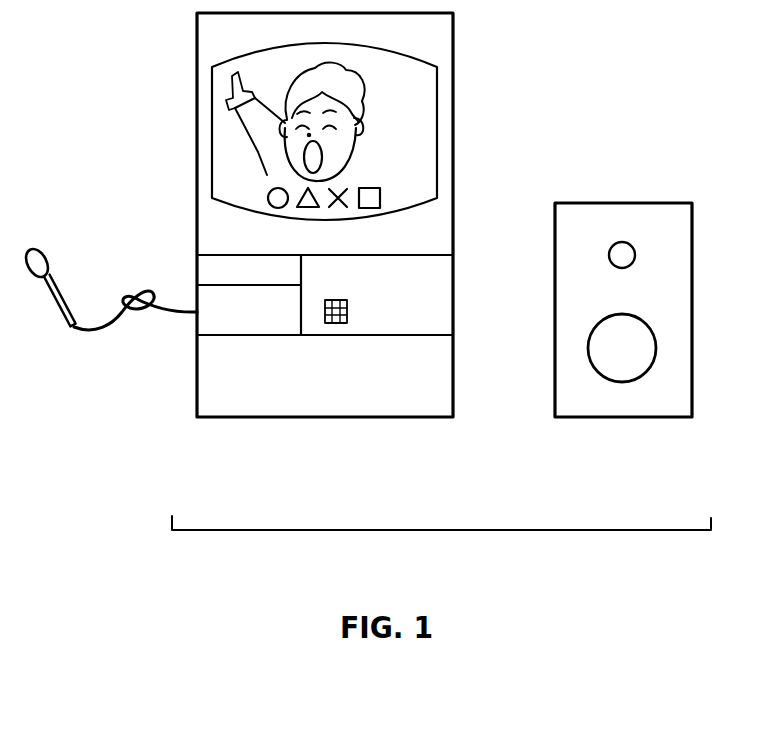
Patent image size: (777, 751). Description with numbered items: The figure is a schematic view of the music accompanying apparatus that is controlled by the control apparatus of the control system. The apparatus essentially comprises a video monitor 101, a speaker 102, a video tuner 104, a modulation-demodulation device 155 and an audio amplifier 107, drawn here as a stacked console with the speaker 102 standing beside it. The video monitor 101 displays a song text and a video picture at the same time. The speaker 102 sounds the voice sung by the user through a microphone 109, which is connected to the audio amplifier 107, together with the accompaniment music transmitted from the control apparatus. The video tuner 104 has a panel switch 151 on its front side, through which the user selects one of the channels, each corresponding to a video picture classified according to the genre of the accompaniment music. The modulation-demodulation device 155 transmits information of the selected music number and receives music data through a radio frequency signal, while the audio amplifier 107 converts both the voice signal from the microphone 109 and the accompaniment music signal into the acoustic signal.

The video monitor 101 is at (455, 40).
The speaker 102 is at (697, 300).
The video tuner 104 is at (455, 300).
The audio amplifier 107 is at (455, 383).
The microphone 109 is at (72, 297).
The panel switch 151 is at (348, 312).
The modulation-demodulation device 155 is at (197, 272).